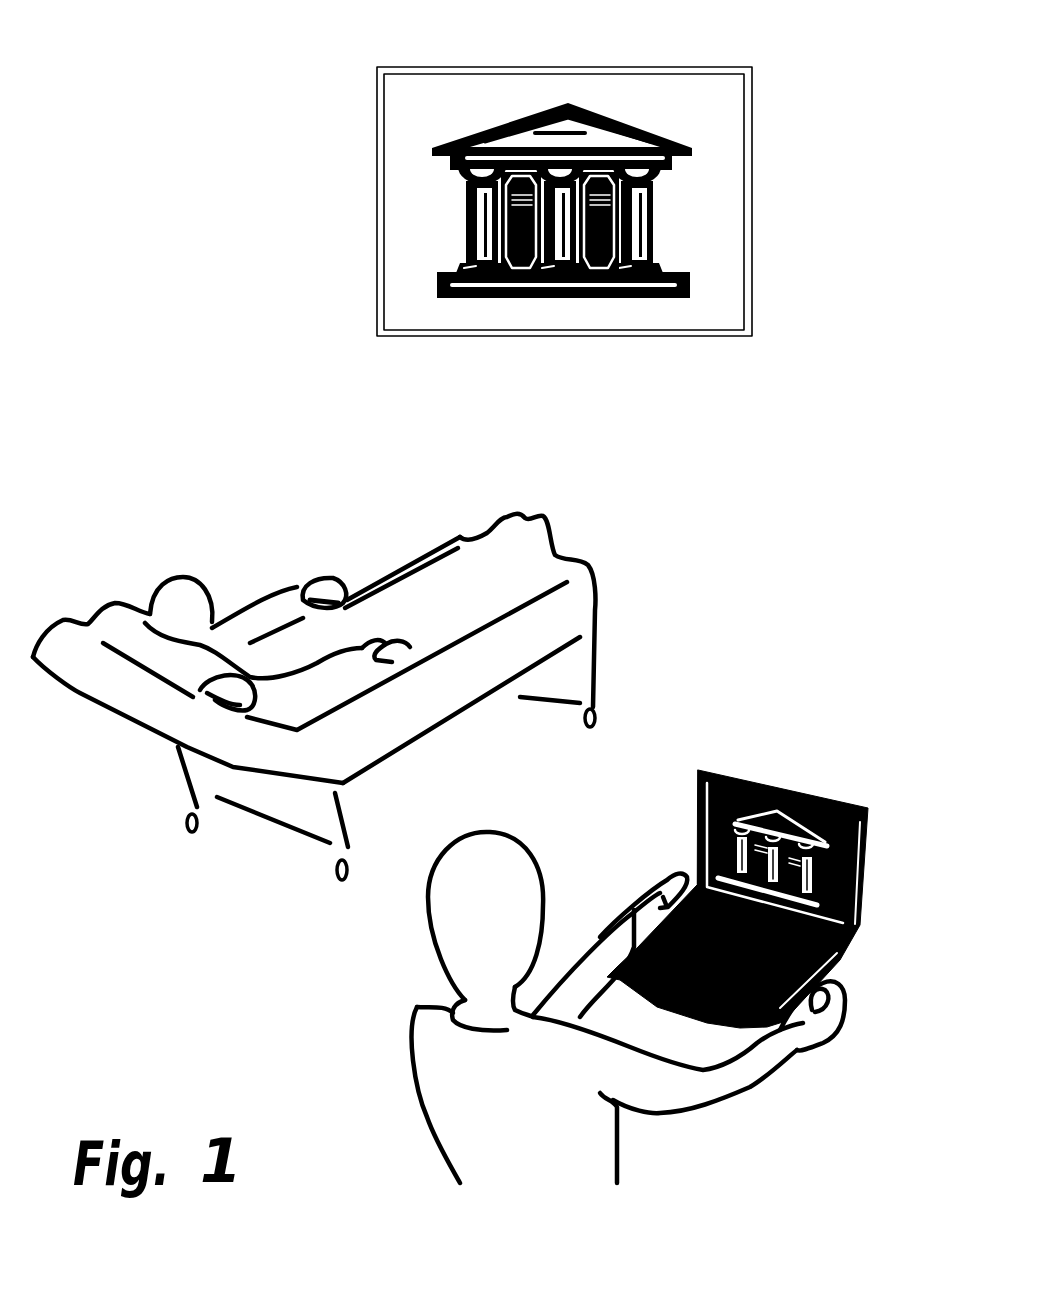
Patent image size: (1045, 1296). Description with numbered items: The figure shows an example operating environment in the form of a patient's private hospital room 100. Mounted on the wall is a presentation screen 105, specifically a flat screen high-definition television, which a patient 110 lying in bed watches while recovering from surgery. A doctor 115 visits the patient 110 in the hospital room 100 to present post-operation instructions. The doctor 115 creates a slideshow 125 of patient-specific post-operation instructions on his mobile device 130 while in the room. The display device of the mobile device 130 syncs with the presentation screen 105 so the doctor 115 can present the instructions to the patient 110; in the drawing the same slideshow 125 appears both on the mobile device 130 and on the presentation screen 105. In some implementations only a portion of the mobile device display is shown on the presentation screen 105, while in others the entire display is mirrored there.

The private hospital room 100 is at (270, 48).
The presentation screen 105 is at (378, 67).
The patient 110 is at (188, 568).
The doctor 115 is at (417, 1007).
The slideshow 125 is at (412, 137).
The mobile device 130 is at (713, 768).